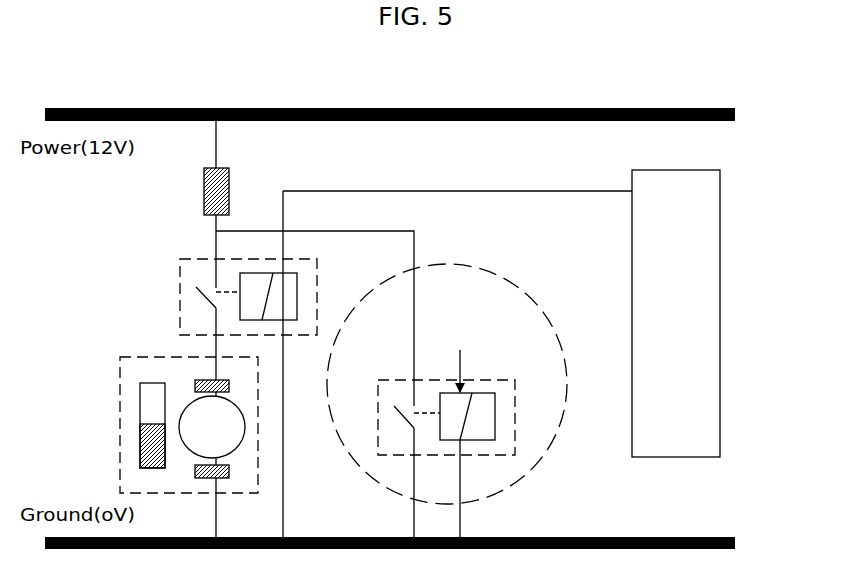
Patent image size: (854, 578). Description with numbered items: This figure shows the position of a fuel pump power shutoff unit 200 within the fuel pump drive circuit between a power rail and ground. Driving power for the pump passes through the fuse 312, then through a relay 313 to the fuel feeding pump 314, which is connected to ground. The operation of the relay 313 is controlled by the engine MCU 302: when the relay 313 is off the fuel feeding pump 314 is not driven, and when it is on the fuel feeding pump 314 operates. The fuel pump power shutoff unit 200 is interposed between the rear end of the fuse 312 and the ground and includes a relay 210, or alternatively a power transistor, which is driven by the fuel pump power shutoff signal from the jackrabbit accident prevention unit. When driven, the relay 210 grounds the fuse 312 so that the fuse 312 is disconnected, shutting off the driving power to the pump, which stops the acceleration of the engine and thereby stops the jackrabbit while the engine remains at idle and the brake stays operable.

The fuse 312 is at (204, 193).
The relay 313 is at (180, 292).
The fuel feeding pump 314 is at (120, 409).
The fuel pump power shutoff unit 200 is at (500, 278).
The relay 210 is at (515, 428).
The engine MCU 302 is at (720, 289).